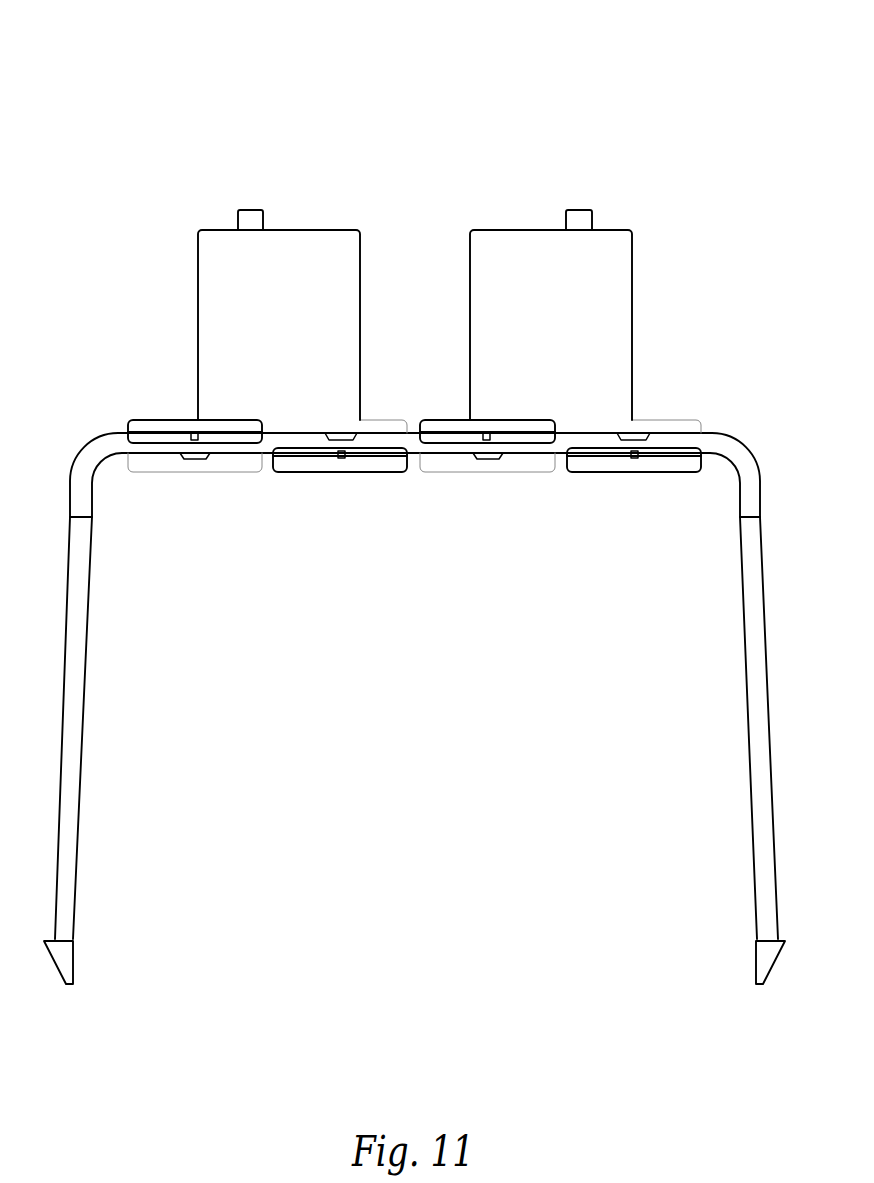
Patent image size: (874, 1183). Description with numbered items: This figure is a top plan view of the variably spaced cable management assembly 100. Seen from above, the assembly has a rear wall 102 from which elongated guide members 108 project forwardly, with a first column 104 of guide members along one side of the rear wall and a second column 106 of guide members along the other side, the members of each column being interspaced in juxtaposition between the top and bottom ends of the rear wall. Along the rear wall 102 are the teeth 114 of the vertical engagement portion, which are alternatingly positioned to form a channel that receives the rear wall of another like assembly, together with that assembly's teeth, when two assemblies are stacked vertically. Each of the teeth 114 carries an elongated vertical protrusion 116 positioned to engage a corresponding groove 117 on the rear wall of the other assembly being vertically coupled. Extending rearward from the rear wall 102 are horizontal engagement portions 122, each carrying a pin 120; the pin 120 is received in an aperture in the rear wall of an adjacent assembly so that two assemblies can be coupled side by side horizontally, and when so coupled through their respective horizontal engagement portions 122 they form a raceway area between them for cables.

The variably spaced cable management assembly 100 is at (708, 53).
The rear wall 102 is at (290, 433).
The first column 104 is at (131, 893).
The second column 106 is at (707, 893).
The elongated guide member 108 is at (80, 765).
The teeth 114 is at (143, 418).
The elongated vertical protrusion 116 is at (196, 433).
The groove 117 is at (342, 433).
The pin 120 is at (246, 208).
The horizontal engagement portion 122 is at (312, 192).